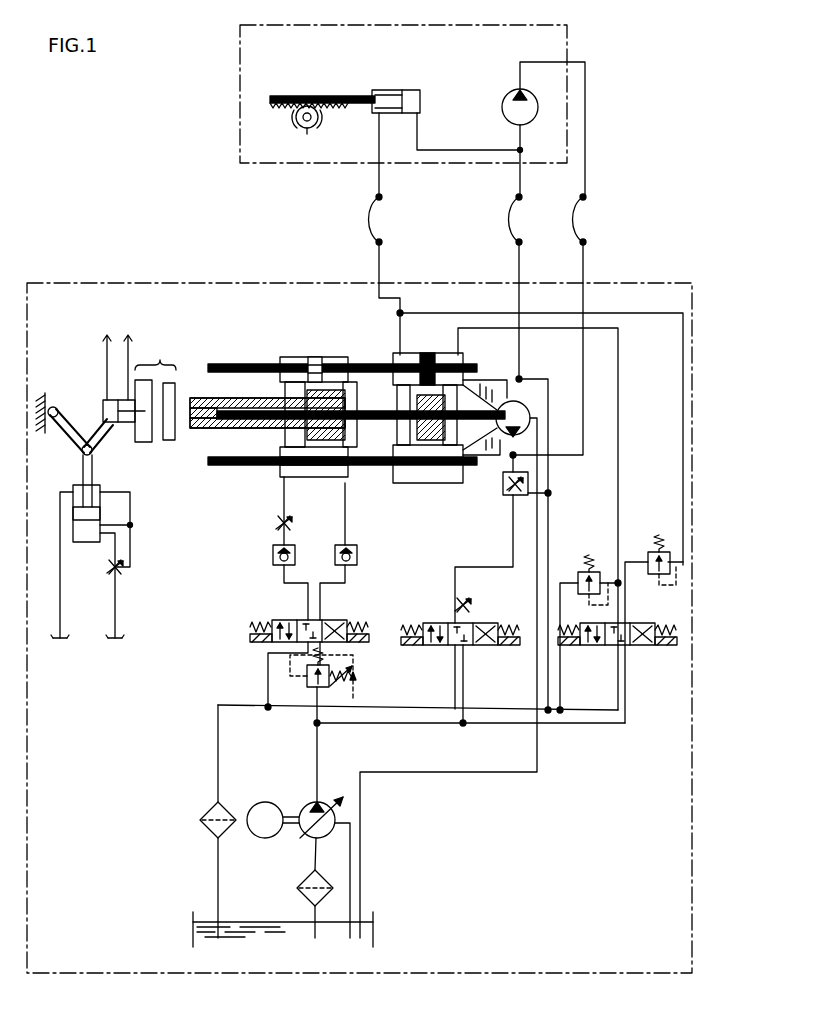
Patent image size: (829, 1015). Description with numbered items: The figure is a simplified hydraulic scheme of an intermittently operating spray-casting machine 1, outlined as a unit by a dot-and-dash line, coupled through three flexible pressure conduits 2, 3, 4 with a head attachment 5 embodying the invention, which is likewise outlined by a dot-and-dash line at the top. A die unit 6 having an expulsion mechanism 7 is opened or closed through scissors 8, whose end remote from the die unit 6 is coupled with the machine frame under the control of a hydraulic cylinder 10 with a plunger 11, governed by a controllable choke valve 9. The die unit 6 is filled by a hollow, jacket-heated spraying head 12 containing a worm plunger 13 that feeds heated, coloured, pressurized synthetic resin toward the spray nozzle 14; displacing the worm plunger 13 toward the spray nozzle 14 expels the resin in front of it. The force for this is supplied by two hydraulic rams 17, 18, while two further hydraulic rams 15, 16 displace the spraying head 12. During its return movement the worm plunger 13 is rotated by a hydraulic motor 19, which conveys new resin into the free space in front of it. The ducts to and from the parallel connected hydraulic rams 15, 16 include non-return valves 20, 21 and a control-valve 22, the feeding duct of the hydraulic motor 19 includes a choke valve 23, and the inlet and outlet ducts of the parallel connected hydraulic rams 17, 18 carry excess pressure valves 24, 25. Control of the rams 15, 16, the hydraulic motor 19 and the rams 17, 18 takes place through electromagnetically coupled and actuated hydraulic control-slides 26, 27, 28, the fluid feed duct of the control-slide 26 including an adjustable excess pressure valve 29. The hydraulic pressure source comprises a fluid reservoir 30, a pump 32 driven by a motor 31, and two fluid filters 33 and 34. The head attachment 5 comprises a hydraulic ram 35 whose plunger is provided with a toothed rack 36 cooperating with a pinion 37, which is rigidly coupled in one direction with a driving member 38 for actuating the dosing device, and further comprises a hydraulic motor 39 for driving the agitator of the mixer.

The hydraulic spray-casting machine 1 is at (630, 283).
The flexible pressure conduit 2 is at (370, 222).
The flexible pressure conduit 3 is at (502, 226).
The flexible pressure conduit 4 is at (575, 229).
The head attachment 5 is at (452, 27).
The die unit 6 is at (160, 360).
The expulsion mechanism 7 is at (104, 400).
The scissors 8 is at (80, 450).
The controllable choke valve 9 is at (112, 574).
The hydraulic cylinder 10 is at (73, 530).
The plunger 11 is at (75, 500).
The spraying head 12 is at (225, 436).
The worm plunger 13 is at (240, 364).
The spray nozzle 14 is at (192, 400).
The hydraulic ram 15 is at (332, 357).
The hydraulic ram 16 is at (278, 477).
The hydraulic ram 17 is at (408, 353).
The hydraulic ram 18 is at (398, 483).
The hydraulic motor 19 is at (517, 403).
The non-return valve 20 is at (272, 557).
The non-return valve 21 is at (357, 562).
The control-valve 22 is at (278, 522).
The choke valve 23 is at (506, 497).
The excess pressure valve 24 is at (578, 570).
The excess pressure valve 25 is at (648, 548).
The hydraulic control-slide 26 is at (272, 648).
The hydraulic control-slide 27 is at (445, 648).
The hydraulic control-slide 28 is at (605, 648).
The adjustable excess pressure valve 29 is at (305, 690).
The fluid reservoir 30 is at (193, 922).
The motor 31 is at (275, 802).
The pump 32 is at (325, 805).
The fluid filter 33 is at (305, 880).
The fluid filter 34 is at (212, 805).
The hydraulic ram 35 is at (415, 90).
The toothed rack 36 is at (276, 95).
The pinion 37 is at (307, 130).
The driving member 38 is at (296, 113).
The hydraulic motor 39 is at (516, 88).